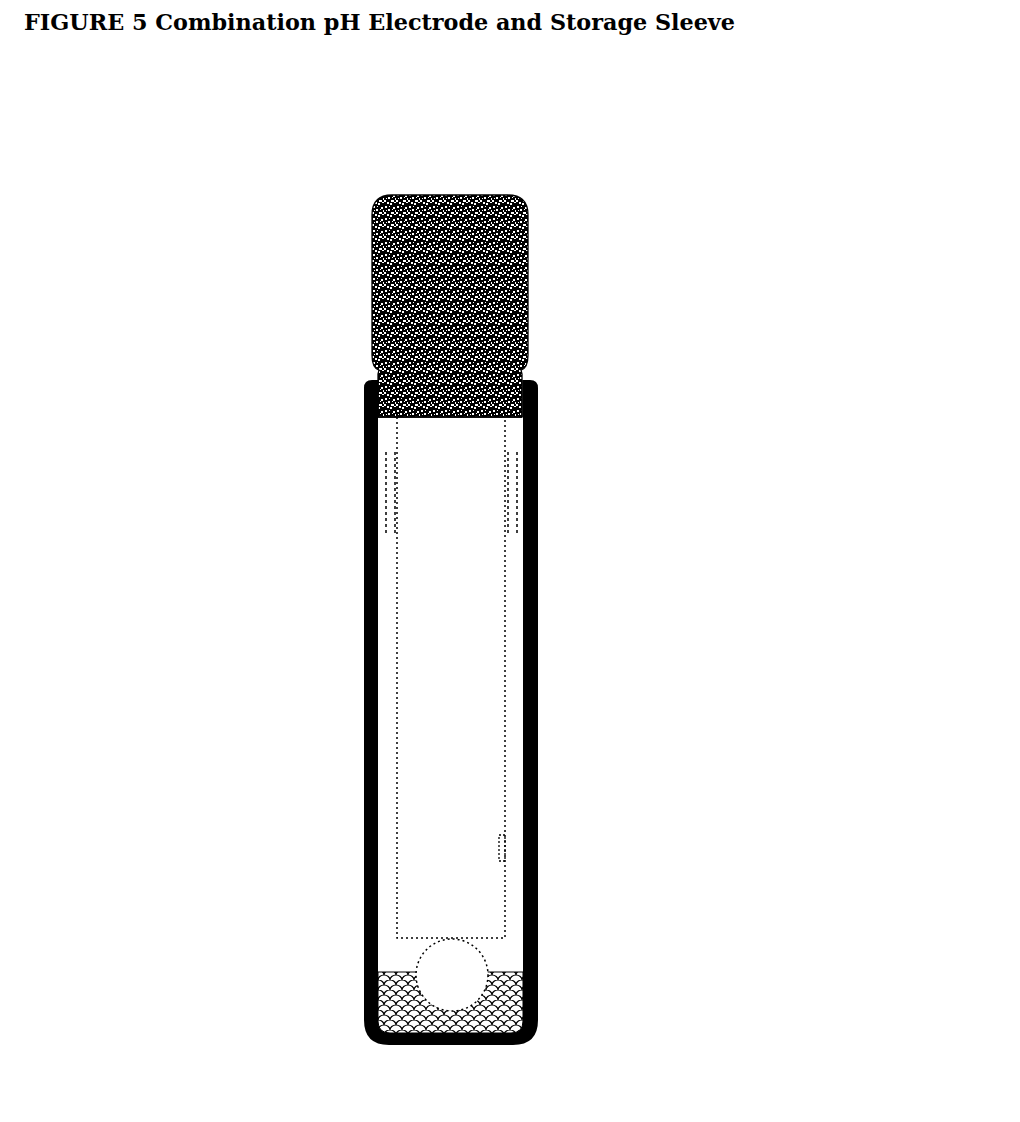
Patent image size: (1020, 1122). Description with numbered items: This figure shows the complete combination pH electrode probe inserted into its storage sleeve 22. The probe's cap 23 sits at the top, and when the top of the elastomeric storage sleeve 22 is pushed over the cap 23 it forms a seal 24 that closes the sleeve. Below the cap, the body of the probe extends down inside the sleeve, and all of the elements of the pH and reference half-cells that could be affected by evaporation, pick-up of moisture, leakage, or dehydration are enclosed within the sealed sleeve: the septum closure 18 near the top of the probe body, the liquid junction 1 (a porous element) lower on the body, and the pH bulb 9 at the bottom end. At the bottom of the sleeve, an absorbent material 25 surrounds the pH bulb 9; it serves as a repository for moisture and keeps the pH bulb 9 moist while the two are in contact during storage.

The liquid junction 1 is at (516, 849).
The pH bulb 9 is at (486, 991).
The septum closure 18 is at (386, 503).
The storage sleeve 22 is at (541, 728).
The cap 23 is at (371, 272).
The seal 24 is at (543, 391).
The absorbent material 25 is at (399, 997).